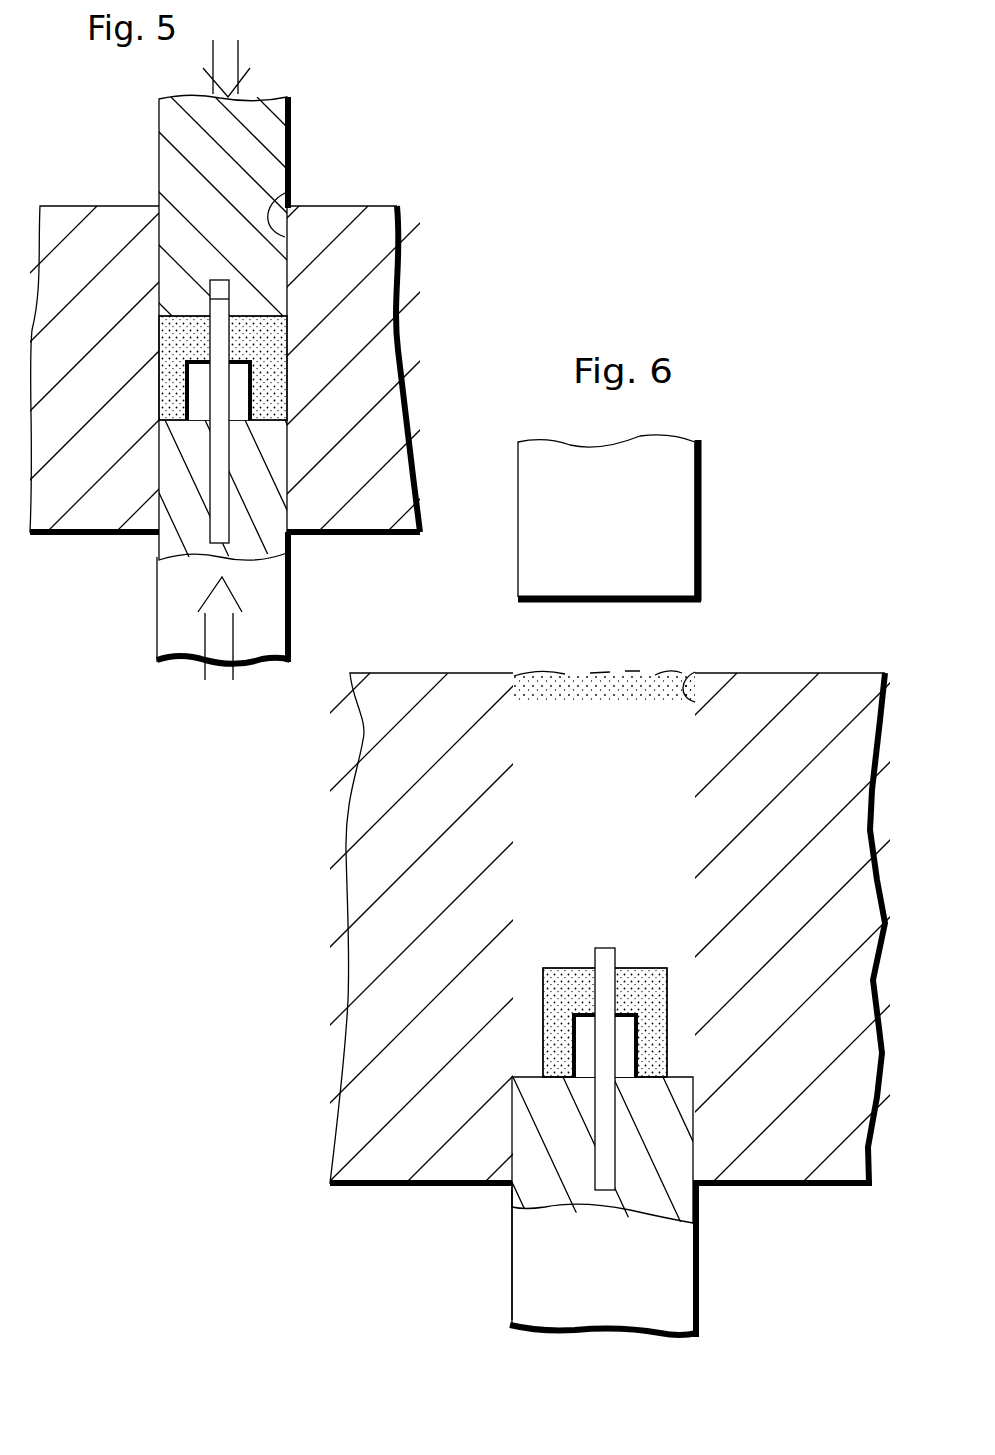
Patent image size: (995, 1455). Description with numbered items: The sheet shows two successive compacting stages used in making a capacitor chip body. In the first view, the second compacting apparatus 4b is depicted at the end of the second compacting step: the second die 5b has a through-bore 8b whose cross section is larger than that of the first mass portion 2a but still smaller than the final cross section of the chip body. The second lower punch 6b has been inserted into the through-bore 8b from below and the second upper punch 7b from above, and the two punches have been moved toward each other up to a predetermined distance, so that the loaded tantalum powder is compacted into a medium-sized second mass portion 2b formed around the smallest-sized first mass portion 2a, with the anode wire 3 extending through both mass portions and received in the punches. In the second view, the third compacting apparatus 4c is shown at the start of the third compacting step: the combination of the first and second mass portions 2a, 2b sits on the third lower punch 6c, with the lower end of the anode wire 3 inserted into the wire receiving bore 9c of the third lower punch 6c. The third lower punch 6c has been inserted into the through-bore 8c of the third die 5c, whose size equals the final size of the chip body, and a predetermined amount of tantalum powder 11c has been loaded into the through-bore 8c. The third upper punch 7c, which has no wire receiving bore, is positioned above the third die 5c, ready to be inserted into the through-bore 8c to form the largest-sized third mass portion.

In FIG. 5, the second compacting apparatus 4b is at (101, 172).
In FIG. 5, the second die 5b is at (383, 209).
In FIG. 5, the second upper punch 7b is at (293, 127).
In FIG. 5, the through-bore 8b is at (293, 190).
In FIG. 5, the second lower punch 6b is at (157, 617).
In FIG. 5, the second mass portion 2b is at (159, 380).
In FIG. 6, the second mass portion 2b is at (560, 968).
In FIG. 5, the first mass portion 2a is at (250, 392).
In FIG. 6, the first mass portion 2a is at (587, 1053).
In FIG. 5, the anode wire 3 is at (218, 498).
In FIG. 6, the anode wire 3 is at (607, 948).
In FIG. 6, the third compacting apparatus 4c is at (483, 647).
In FIG. 6, the third die 5c is at (792, 673).
In FIG. 6, the third upper punch 7c is at (705, 487).
In FIG. 6, the through-bore 8c is at (683, 673).
In FIG. 6, the tantalum powder 11c is at (580, 687).
In FIG. 6, the wire receiving bore 9c is at (605, 1155).
In FIG. 6, the third lower punch 6c is at (703, 1264).